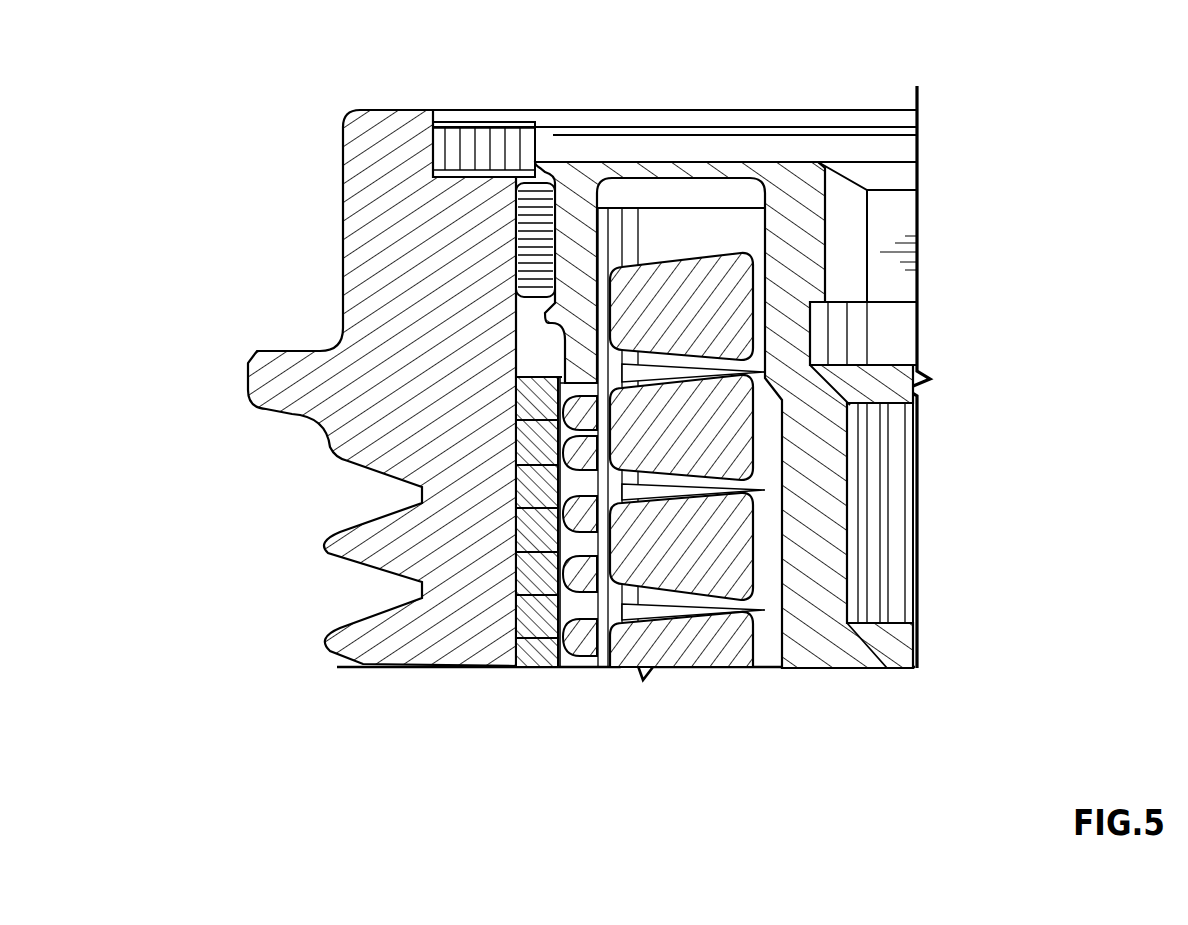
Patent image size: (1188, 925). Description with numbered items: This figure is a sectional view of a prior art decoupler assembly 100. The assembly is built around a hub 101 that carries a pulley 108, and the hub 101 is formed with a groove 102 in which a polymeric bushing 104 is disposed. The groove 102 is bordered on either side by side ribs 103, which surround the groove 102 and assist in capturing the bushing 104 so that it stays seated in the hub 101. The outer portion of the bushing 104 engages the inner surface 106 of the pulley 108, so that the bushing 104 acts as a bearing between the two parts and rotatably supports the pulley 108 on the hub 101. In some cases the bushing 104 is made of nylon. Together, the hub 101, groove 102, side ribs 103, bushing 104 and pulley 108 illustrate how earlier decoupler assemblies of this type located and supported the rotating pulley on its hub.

The decoupler assembly 100 is at (248, 56).
The hub 101 is at (603, 165).
The groove 102 is at (553, 225).
The side ribs 103 is at (550, 162).
The polymeric bushing 104 is at (523, 227).
The inner surface 106 is at (523, 350).
The pulley 108 is at (358, 263).